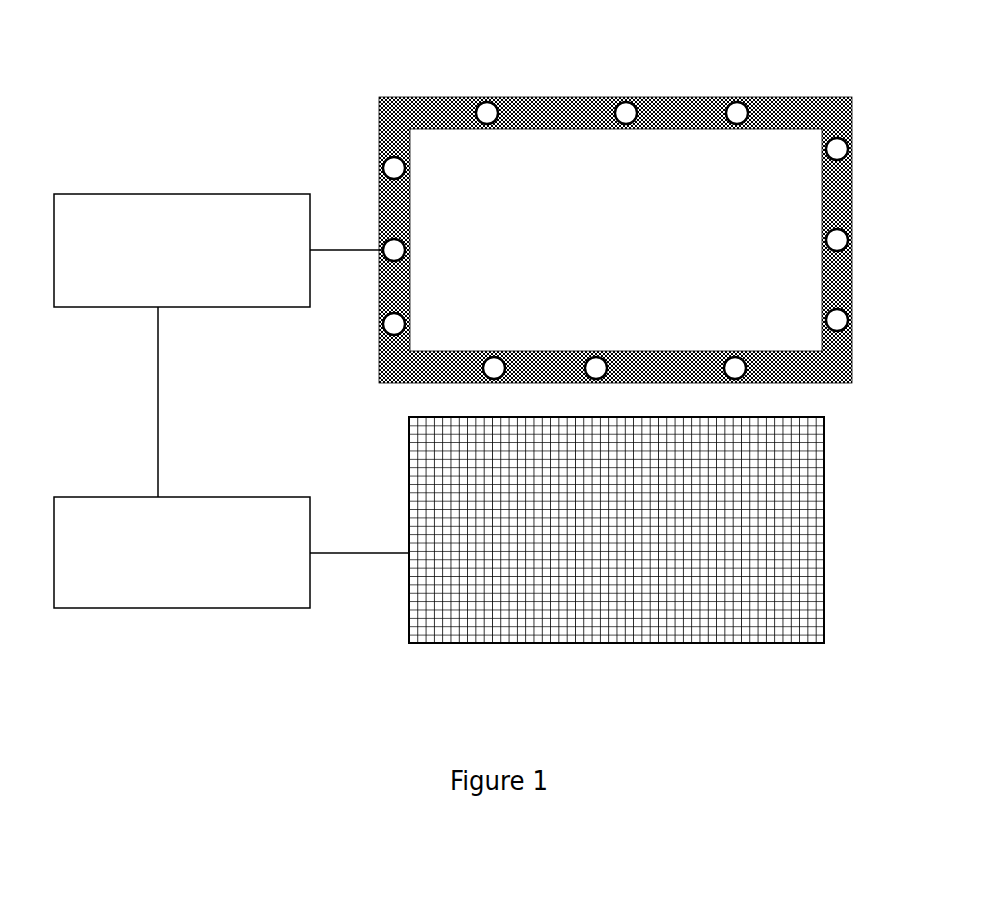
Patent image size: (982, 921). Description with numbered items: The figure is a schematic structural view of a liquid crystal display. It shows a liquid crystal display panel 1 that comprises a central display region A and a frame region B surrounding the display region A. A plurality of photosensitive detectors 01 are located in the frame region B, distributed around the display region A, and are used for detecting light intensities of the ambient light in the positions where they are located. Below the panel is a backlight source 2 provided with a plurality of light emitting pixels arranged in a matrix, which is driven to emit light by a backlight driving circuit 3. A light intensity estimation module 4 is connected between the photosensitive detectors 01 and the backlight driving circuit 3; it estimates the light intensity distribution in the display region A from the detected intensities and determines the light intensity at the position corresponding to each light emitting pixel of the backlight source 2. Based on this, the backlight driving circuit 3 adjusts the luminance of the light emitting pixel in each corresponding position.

The liquid crystal display panel 1 is at (612, 97).
The frame region B is at (553, 97).
The photosensitive detector 01 is at (384, 238).
The display region A is at (785, 158).
The backlight source 2 is at (585, 643).
The backlight driving circuit 3 is at (182, 608).
The light intensity estimation module 4 is at (193, 194).